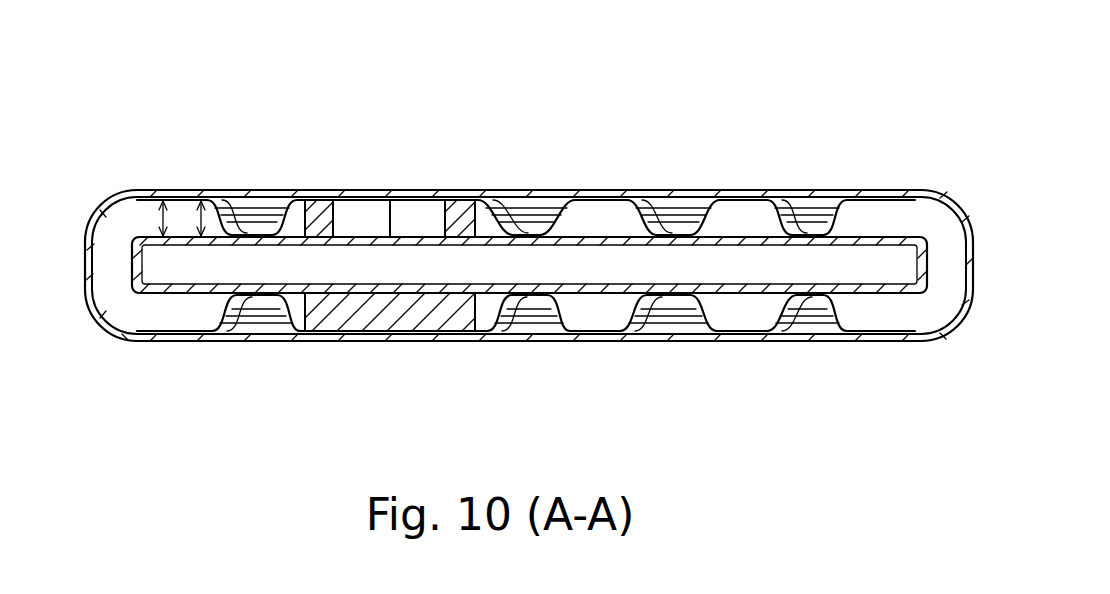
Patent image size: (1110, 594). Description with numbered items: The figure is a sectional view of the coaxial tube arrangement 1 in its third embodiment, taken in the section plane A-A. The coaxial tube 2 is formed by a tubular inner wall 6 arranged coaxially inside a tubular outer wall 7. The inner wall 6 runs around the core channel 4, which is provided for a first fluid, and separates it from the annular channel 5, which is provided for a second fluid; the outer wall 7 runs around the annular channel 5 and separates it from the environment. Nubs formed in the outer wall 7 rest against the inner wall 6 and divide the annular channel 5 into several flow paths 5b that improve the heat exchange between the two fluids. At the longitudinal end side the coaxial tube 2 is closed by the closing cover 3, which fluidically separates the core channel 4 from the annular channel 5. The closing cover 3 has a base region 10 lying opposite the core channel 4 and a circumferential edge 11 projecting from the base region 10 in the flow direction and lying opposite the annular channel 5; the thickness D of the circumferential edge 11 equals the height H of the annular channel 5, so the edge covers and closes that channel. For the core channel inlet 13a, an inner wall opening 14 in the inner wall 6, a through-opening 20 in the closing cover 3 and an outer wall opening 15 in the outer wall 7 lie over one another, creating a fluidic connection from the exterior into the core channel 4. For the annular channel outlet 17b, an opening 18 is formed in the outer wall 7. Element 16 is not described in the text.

The coaxial tube arrangement 1 is at (793, 91).
The coaxial tube 2 is at (862, 347).
The closing cover 3 is at (367, 311).
The core channel 4 is at (174, 256).
The annular channel 5 is at (129, 294).
The flow paths 5b is at (743, 215).
The inner wall 6 is at (685, 233).
The outer wall 7 is at (633, 197).
The base region 10 is at (262, 264).
The circumferential edge 11 is at (127, 231).
The core channel inlet 13a is at (459, 192).
The inner wall opening 14 is at (402, 240).
The outer wall opening 15 is at (362, 205).
The support block 16 is at (311, 196).
The annular channel outlet 17b is at (839, 191).
The opening 18 is at (790, 200).
The through-opening 20 is at (390, 200).
The height of the annular channel H is at (163, 199).
The thickness of the circumferential edge D is at (201, 199).